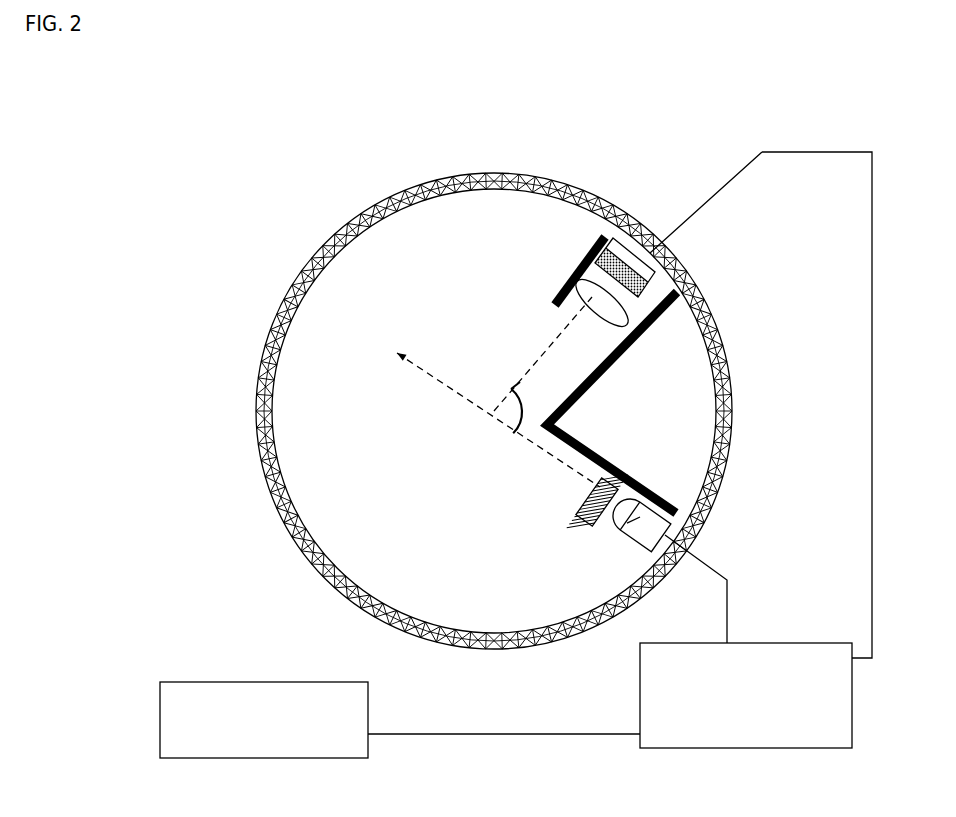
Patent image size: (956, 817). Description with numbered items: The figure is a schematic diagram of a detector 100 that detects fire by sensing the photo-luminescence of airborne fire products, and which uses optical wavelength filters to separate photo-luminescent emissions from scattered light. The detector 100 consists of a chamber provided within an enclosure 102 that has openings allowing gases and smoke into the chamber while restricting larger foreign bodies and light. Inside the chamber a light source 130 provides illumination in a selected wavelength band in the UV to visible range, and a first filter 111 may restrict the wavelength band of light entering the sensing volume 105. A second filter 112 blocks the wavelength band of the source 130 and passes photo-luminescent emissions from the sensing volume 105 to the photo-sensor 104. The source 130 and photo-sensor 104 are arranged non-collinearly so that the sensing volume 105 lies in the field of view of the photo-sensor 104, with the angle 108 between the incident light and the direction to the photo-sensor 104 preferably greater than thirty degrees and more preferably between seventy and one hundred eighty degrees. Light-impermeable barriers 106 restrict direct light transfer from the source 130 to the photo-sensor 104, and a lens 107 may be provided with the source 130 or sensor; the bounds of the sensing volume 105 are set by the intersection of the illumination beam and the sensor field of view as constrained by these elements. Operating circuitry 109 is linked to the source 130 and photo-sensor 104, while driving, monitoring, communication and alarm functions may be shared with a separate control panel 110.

The detector 100 is at (472, 155).
The enclosure 102 is at (303, 265).
The photo-sensor 104 is at (647, 278).
The sensing volume 105 is at (473, 420).
The light-impermeable barriers 106 is at (604, 237).
The lens 107 is at (650, 325).
The angle 108 is at (511, 388).
The operating circuitry 109 is at (756, 450).
The control unit or panel 110 is at (400, 720).
The first filter 111 is at (583, 507).
The second filter 112 is at (640, 303).
The light source 130 is at (637, 525).